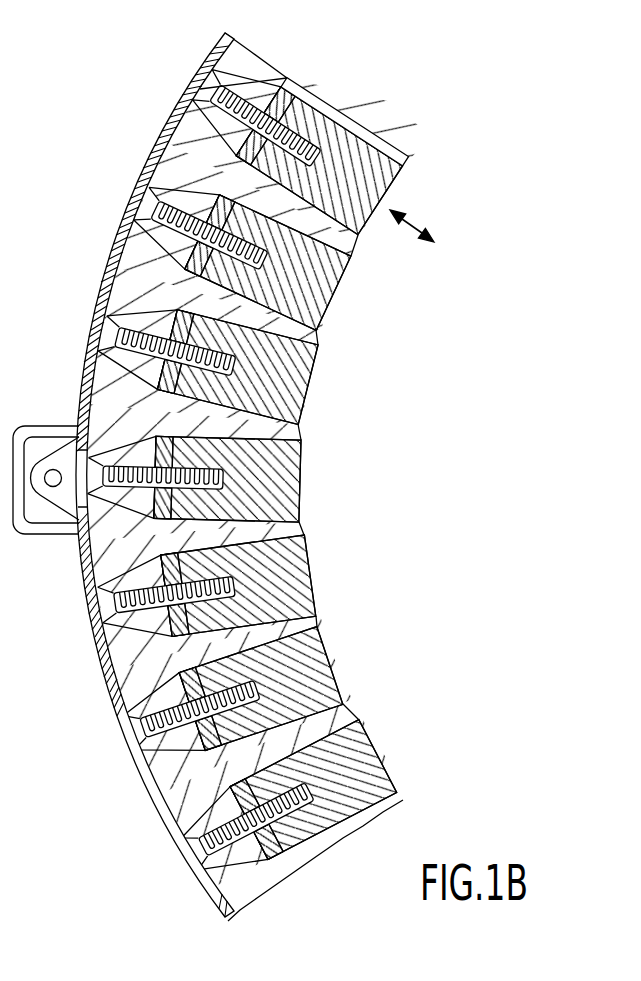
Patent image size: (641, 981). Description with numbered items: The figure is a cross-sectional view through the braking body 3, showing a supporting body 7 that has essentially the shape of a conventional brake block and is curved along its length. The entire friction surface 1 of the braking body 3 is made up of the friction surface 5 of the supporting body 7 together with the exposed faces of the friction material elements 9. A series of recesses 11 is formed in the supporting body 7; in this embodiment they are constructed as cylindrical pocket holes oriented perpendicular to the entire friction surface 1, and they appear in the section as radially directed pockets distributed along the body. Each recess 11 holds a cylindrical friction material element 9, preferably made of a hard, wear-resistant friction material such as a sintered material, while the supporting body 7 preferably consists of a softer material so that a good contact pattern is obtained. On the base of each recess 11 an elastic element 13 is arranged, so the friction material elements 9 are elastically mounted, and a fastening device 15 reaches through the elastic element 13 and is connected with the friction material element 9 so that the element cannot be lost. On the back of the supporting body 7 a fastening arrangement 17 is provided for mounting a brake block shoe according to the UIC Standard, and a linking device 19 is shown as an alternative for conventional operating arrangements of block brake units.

The entire friction surface 1 is at (223, 478).
The braking body 3 is at (100, 236).
The friction surface 5 is at (292, 332).
The supporting body 7 is at (112, 388).
The friction material element 9 is at (363, 158).
The recess 11 is at (350, 132).
The elastic element 13 is at (288, 96).
The fastening device 15 is at (205, 92).
The fastening arrangement 17 is at (32, 426).
The linking device 19 is at (55, 497).